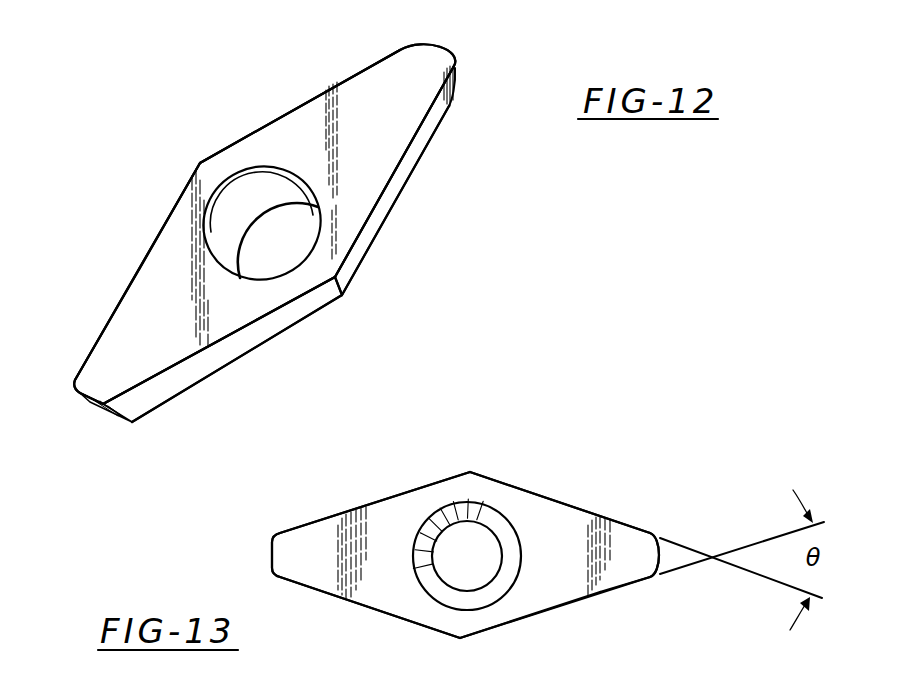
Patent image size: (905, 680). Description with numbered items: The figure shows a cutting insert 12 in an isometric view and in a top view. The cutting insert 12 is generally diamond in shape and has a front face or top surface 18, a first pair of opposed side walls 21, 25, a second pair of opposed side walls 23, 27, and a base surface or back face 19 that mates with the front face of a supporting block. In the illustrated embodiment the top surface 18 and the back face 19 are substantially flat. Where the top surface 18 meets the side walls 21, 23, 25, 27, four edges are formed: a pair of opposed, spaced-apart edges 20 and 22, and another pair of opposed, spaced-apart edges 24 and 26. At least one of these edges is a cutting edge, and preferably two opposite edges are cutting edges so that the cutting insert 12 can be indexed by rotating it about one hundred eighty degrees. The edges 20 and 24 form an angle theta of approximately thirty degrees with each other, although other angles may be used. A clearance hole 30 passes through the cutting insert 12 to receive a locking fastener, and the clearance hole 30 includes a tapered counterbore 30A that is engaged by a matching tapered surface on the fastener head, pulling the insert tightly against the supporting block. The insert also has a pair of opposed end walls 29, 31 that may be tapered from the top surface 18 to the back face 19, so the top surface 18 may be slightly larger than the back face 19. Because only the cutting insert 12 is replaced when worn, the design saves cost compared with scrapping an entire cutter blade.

In FIG. 12, the cutting insert 12 is at (144, 172).
In FIG. 13, the cutting insert 12 is at (596, 492).
In FIG. 12, the top surface 18 is at (388, 88).
In FIG. 13, the top surface 18 is at (630, 573).
In FIG. 12, the back face 19 is at (260, 347).
In FIG. 12, the edge 20 is at (423, 125).
In FIG. 13, the edge 20 is at (552, 611).
In FIG. 12, the side wall 21 is at (388, 202).
In FIG. 12, the edge 22 is at (105, 329).
In FIG. 13, the edge 22 is at (323, 518).
In FIG. 12, the side wall 23 is at (142, 262).
In FIG. 12, the edge 24 is at (290, 110).
In FIG. 13, the edge 24 is at (540, 497).
In FIG. 12, the side wall 25 is at (337, 82).
In FIG. 12, the edge 26 is at (184, 367).
In FIG. 13, the edge 26 is at (370, 605).
In FIG. 12, the side wall 27 is at (287, 312).
In FIG. 12, the end wall 29 is at (106, 409).
In FIG. 13, the end wall 29 is at (269, 557).
In FIG. 12, the clearance hole 30 is at (270, 192).
In FIG. 13, the clearance hole 30 is at (473, 543).
In FIG. 12, the tapered counterbore 30A is at (217, 197).
In FIG. 13, the tapered counterbore 30A is at (450, 513).
In FIG. 12, the end wall 31 is at (447, 46).
In FIG. 13, the end wall 31 is at (666, 549).